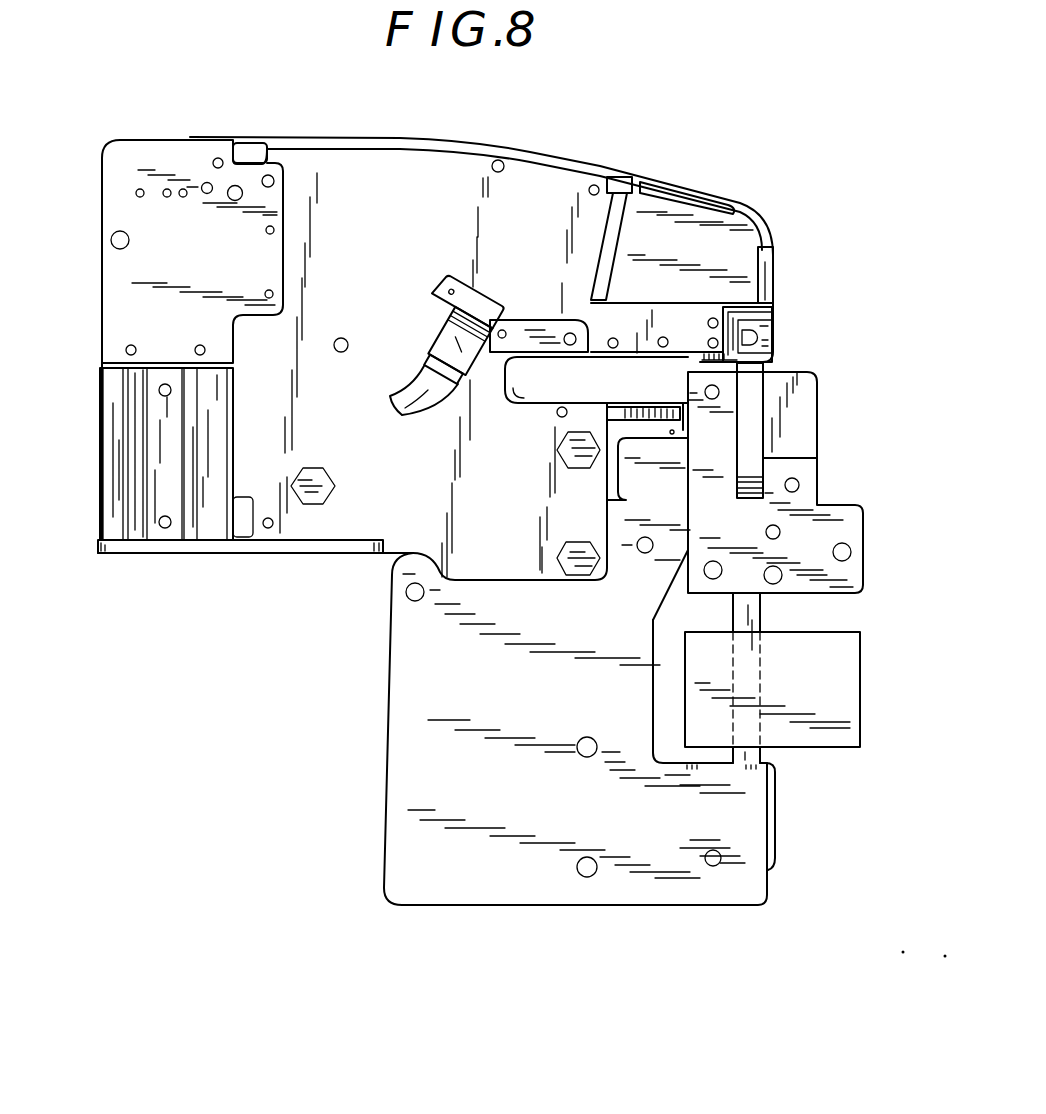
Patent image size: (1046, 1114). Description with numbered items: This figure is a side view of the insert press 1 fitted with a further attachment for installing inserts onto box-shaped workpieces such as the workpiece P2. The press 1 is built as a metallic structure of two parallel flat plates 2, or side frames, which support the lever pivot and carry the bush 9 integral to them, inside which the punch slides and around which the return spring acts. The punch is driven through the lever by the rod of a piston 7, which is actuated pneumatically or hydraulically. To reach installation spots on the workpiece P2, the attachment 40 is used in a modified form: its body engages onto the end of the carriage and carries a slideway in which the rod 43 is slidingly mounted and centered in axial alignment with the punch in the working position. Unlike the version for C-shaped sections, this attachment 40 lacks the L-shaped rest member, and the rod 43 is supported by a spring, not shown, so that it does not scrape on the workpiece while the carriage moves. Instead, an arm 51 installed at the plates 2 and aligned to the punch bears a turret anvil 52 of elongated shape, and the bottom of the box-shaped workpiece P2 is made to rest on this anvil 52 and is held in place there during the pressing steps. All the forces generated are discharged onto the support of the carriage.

The insert press 1 is at (676, 153).
The flat plate 2 is at (353, 173).
The piston 7 is at (108, 425).
The bush 9 is at (772, 334).
The attachment 40 is at (827, 483).
The rod 43 is at (748, 435).
The arm 51 is at (641, 885).
The turret anvil 52 is at (757, 733).
The box-shaped workpiece P2 is at (846, 676).